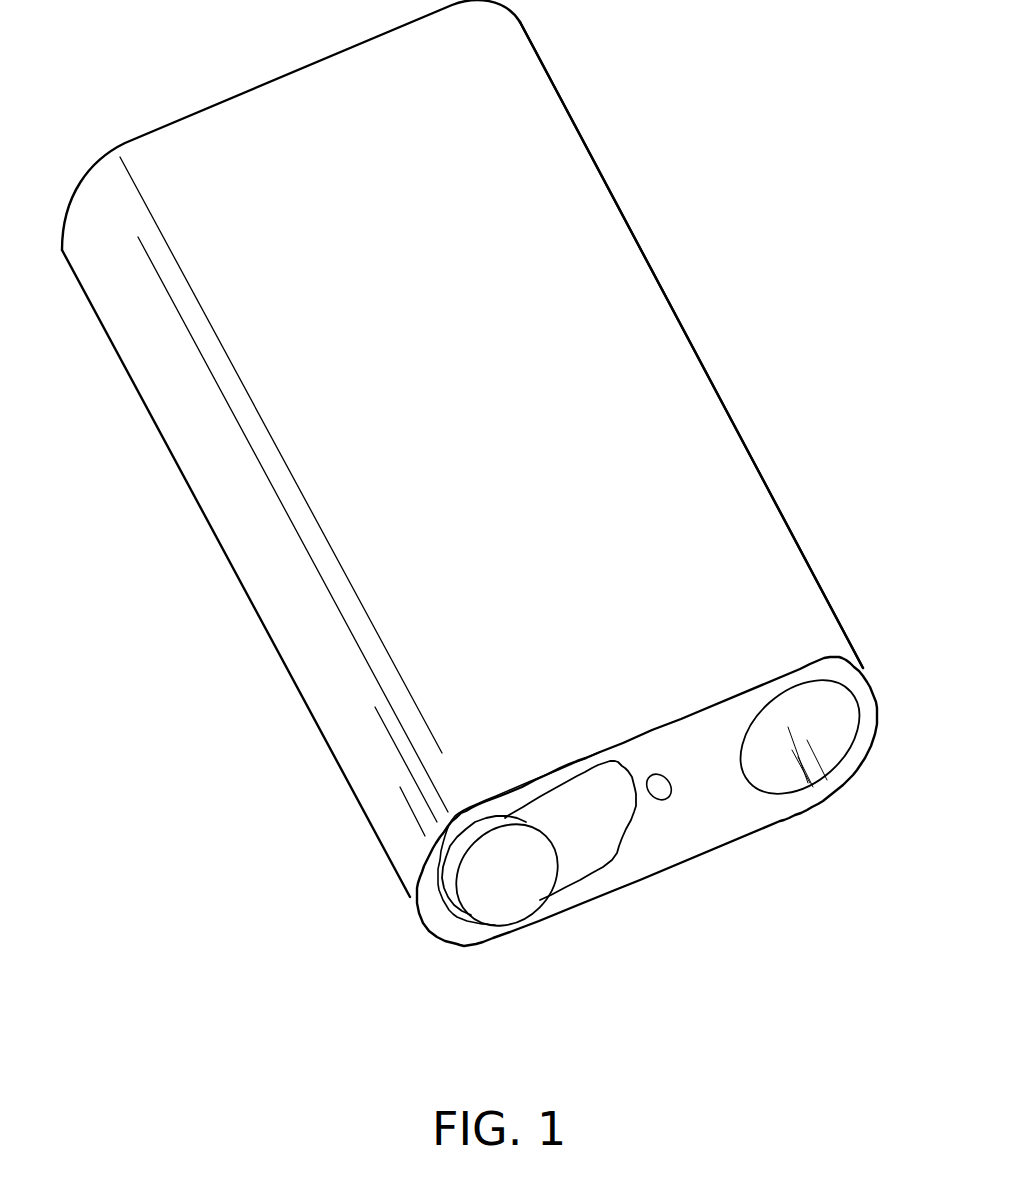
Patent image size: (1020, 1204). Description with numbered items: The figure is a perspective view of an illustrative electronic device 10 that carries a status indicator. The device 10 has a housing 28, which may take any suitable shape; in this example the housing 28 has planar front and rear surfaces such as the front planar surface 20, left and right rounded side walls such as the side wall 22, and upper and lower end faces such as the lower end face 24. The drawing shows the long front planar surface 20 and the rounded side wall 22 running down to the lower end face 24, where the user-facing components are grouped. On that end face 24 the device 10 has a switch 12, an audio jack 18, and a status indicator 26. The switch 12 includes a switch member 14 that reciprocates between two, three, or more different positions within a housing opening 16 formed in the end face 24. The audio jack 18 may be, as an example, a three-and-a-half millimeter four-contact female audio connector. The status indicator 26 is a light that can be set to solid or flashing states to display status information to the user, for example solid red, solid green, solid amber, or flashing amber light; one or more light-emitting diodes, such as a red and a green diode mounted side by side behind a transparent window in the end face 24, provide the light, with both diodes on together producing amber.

The electronic device 10 is at (747, 138).
The switch 12 is at (630, 855).
The switch member 14 is at (505, 913).
The housing opening 16 is at (567, 888).
The audio jack 18 is at (792, 775).
The front planar surface 20 is at (738, 445).
The side wall 22 is at (323, 718).
The lower end face 24 is at (713, 832).
The status indicator 26 is at (670, 763).
The housing 28 is at (665, 295).